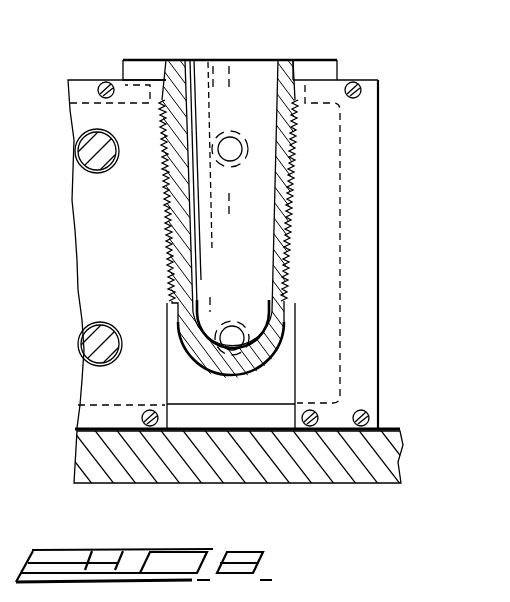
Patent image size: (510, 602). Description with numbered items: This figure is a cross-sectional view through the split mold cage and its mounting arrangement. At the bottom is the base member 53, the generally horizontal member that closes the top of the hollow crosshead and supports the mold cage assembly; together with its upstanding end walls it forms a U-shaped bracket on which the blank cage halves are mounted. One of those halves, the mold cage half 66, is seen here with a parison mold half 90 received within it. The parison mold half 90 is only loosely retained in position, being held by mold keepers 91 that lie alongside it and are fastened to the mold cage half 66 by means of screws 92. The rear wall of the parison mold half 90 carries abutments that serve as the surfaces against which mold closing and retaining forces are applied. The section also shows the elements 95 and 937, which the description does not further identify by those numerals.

The base member 53 is at (385, 450).
The blank cage half 66 is at (380, 269).
The parison mold half 90 is at (266, 59).
The mold keeper 91 is at (95, 250).
The screw 92 is at (107, 81).
The pin 95 is at (88, 145).
The wire 937 is at (238, 140).